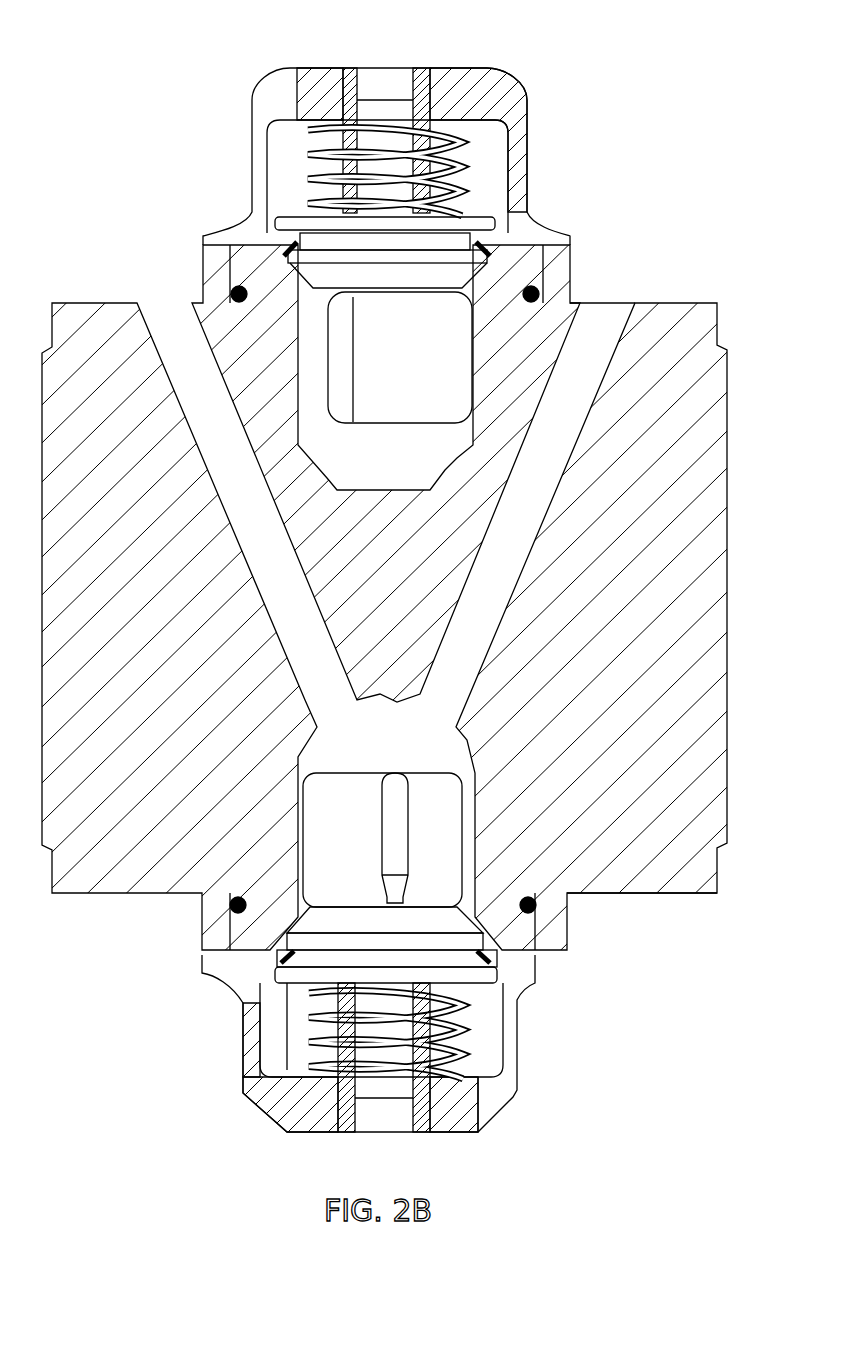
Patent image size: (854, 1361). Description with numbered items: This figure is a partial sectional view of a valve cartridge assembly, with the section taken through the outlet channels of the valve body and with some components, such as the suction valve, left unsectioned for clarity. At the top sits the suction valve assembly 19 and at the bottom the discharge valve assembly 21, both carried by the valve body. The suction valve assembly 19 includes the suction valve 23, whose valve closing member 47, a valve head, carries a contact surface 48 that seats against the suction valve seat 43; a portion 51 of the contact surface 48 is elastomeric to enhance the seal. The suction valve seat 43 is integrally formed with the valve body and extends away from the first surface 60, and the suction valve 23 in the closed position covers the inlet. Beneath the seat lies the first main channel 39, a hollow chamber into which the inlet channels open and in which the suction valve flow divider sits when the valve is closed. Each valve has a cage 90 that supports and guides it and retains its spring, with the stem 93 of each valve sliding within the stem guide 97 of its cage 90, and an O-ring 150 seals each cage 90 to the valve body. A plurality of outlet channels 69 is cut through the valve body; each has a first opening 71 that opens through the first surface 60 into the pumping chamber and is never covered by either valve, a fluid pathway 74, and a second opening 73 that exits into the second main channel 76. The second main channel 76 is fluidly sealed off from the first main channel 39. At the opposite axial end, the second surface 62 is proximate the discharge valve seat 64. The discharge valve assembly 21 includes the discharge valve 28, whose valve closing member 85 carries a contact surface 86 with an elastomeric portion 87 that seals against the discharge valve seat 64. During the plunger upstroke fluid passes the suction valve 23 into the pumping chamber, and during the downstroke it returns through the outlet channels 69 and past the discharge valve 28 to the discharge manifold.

The suction valve assembly 19 is at (381, 213).
The stem guide 97 is at (357, 70).
The stem 93 is at (398, 100).
The cage 90 is at (450, 68).
The suction valve 23 is at (490, 187).
The valve closing member 47 is at (292, 222).
The portion of the contact surface 51 is at (520, 212).
The contact surface 48 is at (213, 238).
The suction valve seat 43 is at (570, 232).
The O-ring 150 is at (232, 292).
The first opening 71 is at (603, 303).
The first surface 60 is at (682, 303).
The first main channel 39 is at (327, 360).
The fluid pathway 74 is at (233, 487).
The outlet channels 69 is at (210, 492).
The second opening 73 is at (330, 716).
The second main channel 76 is at (310, 766).
The contact surface 86 is at (300, 920).
The second surface 62 is at (668, 893).
The discharge valve seat 64 is at (540, 950).
The portion of the contact surface 87 is at (232, 985).
The valve closing member 85 is at (243, 1020).
The discharge valve 28 is at (495, 1000).
The discharge valve assembly 21 is at (401, 988).